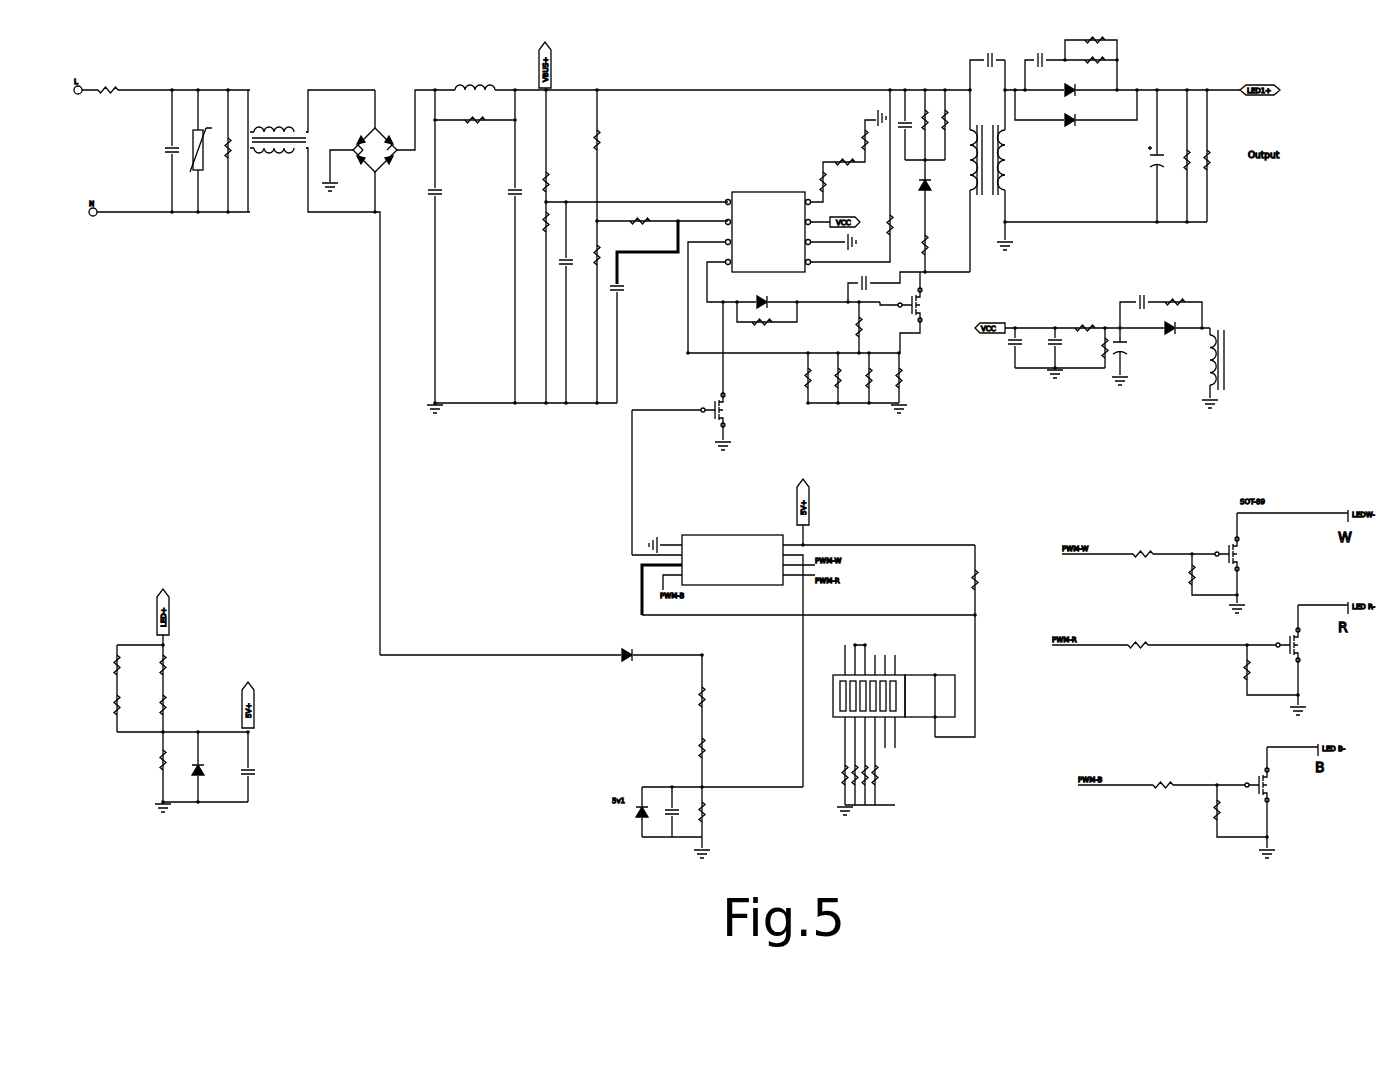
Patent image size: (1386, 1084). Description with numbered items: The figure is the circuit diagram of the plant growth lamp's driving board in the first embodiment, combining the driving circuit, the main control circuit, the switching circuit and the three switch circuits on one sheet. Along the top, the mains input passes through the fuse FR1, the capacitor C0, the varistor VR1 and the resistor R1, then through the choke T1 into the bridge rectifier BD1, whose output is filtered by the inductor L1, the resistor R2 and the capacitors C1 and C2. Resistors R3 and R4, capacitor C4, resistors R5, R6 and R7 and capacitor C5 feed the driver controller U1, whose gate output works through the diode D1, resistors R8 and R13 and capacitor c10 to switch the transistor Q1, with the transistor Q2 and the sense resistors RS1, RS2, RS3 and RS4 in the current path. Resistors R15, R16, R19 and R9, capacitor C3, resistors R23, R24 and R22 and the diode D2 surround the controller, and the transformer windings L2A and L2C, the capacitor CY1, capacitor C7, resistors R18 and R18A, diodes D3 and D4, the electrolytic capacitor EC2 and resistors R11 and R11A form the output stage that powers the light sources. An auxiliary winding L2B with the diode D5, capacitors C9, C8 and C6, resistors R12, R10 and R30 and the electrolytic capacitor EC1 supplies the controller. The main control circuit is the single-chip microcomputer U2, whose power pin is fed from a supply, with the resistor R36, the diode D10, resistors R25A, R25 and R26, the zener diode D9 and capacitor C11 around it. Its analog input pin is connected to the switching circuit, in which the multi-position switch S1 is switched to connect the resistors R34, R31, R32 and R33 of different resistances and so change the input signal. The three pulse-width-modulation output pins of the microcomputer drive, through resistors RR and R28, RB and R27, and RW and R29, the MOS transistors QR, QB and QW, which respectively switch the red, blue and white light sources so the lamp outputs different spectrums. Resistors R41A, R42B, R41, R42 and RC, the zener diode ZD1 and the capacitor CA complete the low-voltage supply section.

The fuse FR1 is at (108, 96).
The capacitor C0 is at (166, 162).
The varistor VR1 is at (206, 150).
The resistor R1 is at (236, 148).
The common mode choke T1 is at (279, 135).
The bridge rectifier BD1 is at (373, 150).
The inductor L1 is at (466, 81).
The resistor R2 is at (475, 126).
The capacitor C1 is at (440, 201).
The capacitor C2 is at (507, 200).
The resistor R3 is at (539, 182).
The resistor R4 is at (541, 247).
The capacitor C4 is at (563, 284).
The resistor R5 is at (602, 140).
The resistor R6 is at (592, 276).
The resistor R7 is at (640, 215).
The capacitor C5 is at (621, 305).
The LED driver controller BP3238 U1 is at (767, 233).
The diode 1N4148 D1 is at (789, 299).
The resistor R8 is at (762, 328).
The resistor R13 is at (838, 325).
The capacitor c10 is at (862, 280).
The MOSFET Q1 is at (914, 303).
The MOSFET Q2 is at (713, 407).
The sense resistor RS1 is at (800, 378).
The sense resistor RS2 is at (830, 378).
The sense resistor RS3 is at (861, 378).
The sense resistor RS4 is at (891, 378).
The resistor R15 is at (830, 182).
The resistor R16 is at (845, 157).
The resistor R19 is at (872, 140).
The resistor R9 is at (883, 225).
The capacitor C3 is at (903, 132).
The resistor R23 is at (922, 126).
The resistor R24 is at (946, 126).
The diode D2 is at (934, 185).
The resistor R22 is at (934, 245).
The transformer primary winding L2A is at (978, 160).
The transformer secondary winding L2C is at (1011, 160).
The Y capacitor CY1 is at (989, 55).
The capacitor C7 is at (1038, 55).
The resistor R18 is at (1095, 55).
The resistor R18A is at (1094, 36).
The output diode D3 is at (1070, 97).
The output diode D4 is at (1070, 127).
The electrolytic capacitor EC2 is at (1162, 156).
The resistor R11 is at (1192, 160).
The resistor R11A is at (1213, 162).
The capacitor C8 is at (1017, 352).
The capacitor C6 is at (1062, 352).
The resistor R10 is at (1085, 334).
The resistor R30 is at (1097, 348).
The electrolytic capacitor EC1 is at (1131, 345).
The capacitor C9 is at (1140, 297).
The resistor R12 is at (1175, 296).
The diode D5 is at (1169, 333).
The auxiliary winding L2B is at (1227, 360).
The single-chip microcomputer U2 is at (732, 555).
The resistor R36 is at (978, 581).
The diode D10 is at (624, 660).
The resistor R25A is at (712, 697).
The resistor R25 is at (710, 748).
The resistor R26 is at (710, 812).
The zener diode 5.1V D9 is at (649, 810).
The capacitor C11 is at (679, 813).
The multi-position switch S1 is at (894, 697).
The resistor R34 is at (841, 780).
The resistor R31 is at (857, 812).
The resistor R32 is at (867, 812).
The resistor R33 is at (877, 812).
The resistor RW is at (1143, 553).
The resistor R29 is at (1199, 575).
The MOS transistor QW is at (1239, 554).
The resistor RR is at (1138, 644).
The resistor R28 is at (1255, 670).
The MOS transistor QR is at (1298, 645).
The resistor RB is at (1163, 784).
The resistor R27 is at (1225, 810).
The MOS transistor QB is at (1268, 785).
The resistor R41A is at (126, 665).
The resistor R42B is at (126, 705).
The resistor R41 is at (170, 665).
The resistor R42 is at (170, 705).
The resistor RC is at (150, 760).
The zener diode ZD1 is at (206, 777).
The capacitor CA is at (253, 773).